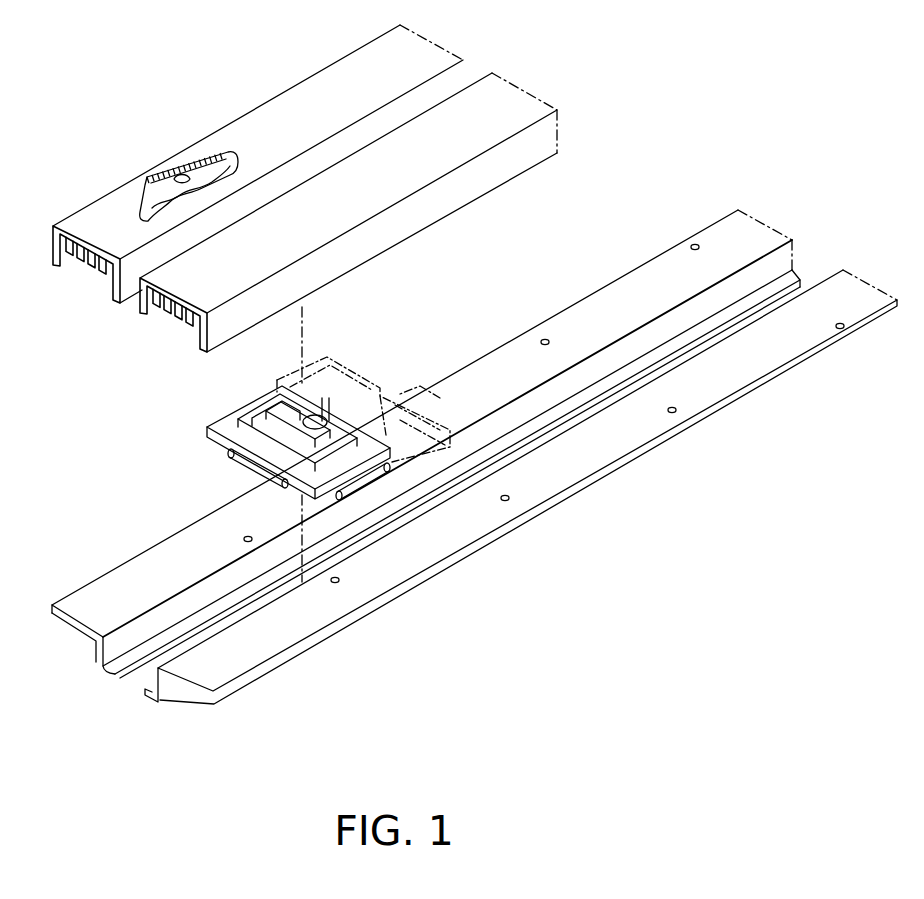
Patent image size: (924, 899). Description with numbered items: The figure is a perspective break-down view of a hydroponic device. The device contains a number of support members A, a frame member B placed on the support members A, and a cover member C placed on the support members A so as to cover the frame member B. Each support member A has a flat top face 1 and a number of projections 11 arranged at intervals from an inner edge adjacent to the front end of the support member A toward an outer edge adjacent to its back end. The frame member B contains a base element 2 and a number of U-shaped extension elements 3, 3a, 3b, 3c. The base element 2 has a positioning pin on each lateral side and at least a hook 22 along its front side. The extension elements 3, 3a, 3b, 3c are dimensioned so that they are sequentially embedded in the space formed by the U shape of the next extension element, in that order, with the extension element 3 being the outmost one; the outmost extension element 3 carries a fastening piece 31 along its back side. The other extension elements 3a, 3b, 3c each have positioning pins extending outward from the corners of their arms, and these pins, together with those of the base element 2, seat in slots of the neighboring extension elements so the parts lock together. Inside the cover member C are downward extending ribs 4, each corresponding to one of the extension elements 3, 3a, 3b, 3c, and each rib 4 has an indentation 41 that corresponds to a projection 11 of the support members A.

The flat top face 1 is at (580, 470).
The projection 11 is at (504, 502).
The support member A is at (437, 577).
The base element 2 is at (363, 363).
The hook 22 is at (326, 412).
The U-shaped extension element 3 is at (220, 433).
The U-shaped extension element 3a is at (240, 411).
The U-shaped extension element 3b is at (240, 443).
The U-shaped extension element 3c is at (250, 410).
The fastening piece 31 is at (243, 470).
The frame member B is at (210, 466).
The cover member C is at (305, 209).
The rib 4 is at (217, 160).
The indentation 41 is at (176, 174).